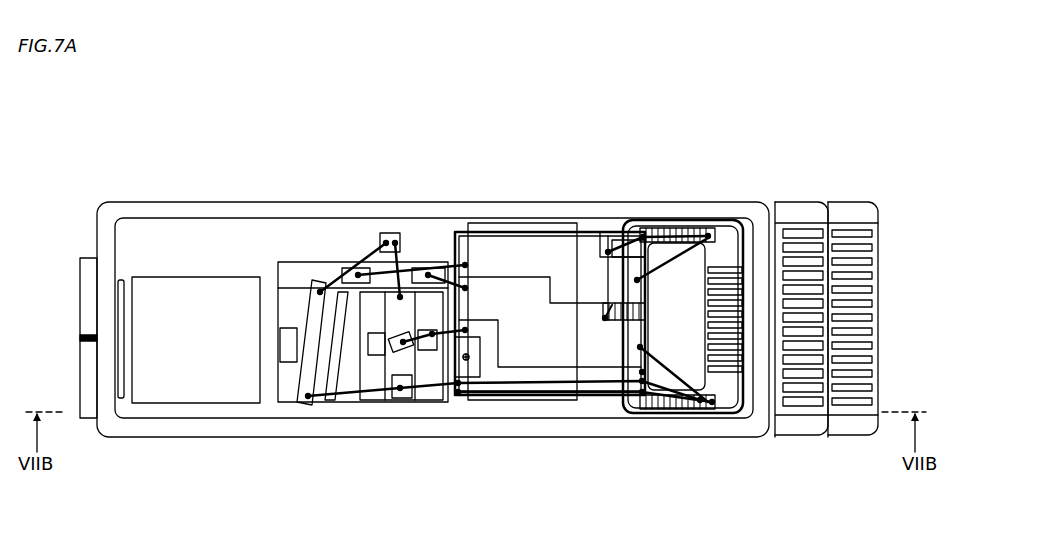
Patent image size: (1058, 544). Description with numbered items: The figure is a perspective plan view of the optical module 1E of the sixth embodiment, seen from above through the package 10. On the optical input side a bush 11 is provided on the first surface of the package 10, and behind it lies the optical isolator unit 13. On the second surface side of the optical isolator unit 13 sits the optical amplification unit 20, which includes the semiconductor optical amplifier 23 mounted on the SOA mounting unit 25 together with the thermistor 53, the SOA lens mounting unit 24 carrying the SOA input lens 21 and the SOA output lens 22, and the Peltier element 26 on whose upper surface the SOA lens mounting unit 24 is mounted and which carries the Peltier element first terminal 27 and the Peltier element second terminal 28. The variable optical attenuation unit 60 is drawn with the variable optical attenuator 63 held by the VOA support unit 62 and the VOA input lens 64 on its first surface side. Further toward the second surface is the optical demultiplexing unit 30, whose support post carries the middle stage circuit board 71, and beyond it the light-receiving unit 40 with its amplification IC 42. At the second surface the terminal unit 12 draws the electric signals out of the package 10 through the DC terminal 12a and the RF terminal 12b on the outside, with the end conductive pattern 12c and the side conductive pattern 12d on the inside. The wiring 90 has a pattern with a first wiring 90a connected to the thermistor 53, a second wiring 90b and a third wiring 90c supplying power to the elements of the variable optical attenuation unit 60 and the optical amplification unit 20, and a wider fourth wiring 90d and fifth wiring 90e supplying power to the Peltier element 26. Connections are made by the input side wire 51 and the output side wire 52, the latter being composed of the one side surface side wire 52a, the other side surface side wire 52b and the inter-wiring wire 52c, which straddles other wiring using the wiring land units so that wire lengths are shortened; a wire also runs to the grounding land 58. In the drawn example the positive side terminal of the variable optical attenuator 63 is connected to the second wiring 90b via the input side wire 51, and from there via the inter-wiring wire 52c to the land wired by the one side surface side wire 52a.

The optical module 1E is at (216, 165).
The package 10 is at (137, 426).
The bush 11 is at (80, 296).
The terminal unit 12 is at (812, 204).
The DC terminal 12a is at (800, 420).
The RF terminal 12b is at (848, 420).
The end conductive pattern 12c is at (745, 396).
The side conductive pattern 12d is at (660, 410).
The optical isolator unit 13 is at (197, 378).
The optical amplification unit 20 is at (408, 250).
The SOA input lens 21 is at (374, 358).
The SOA output lens 22 is at (445, 400).
The semiconductor optical amplifier 23 is at (430, 352).
The SOA lens mounting unit 24 is at (395, 352).
The SOA mounting unit 25 is at (338, 292).
The Peltier element 26 is at (315, 262).
The Peltier element first terminal 27 is at (345, 268).
The Peltier element second terminal 28 is at (425, 266).
The optical demultiplexing unit 30 is at (500, 230).
The light-receiving unit 40 is at (700, 222).
The amplification IC 42 is at (728, 244).
The input side wire 51 is at (455, 234).
The output side wire 52 is at (657, 228).
The one side surface side wire 52a is at (613, 232).
The other side surface side wire 52b is at (700, 410).
The inter-wiring wire 52c is at (612, 322).
The thermistor 53 is at (403, 398).
The grounding land 58 is at (388, 233).
The variable optical attenuation unit 60 is at (292, 255).
The VOA support unit 62 is at (312, 400).
The variable optical attenuator 63 is at (332, 385).
The VOA input lens 64 is at (291, 363).
The middle stage circuit board 71 is at (478, 224).
The wiring 90 is at (585, 236).
The first wiring 90a is at (470, 398).
The second wiring 90b is at (517, 375).
The third wiring 90c is at (540, 340).
The fourth wiring 90d is at (560, 370).
The fifth wiring 90e is at (530, 285).